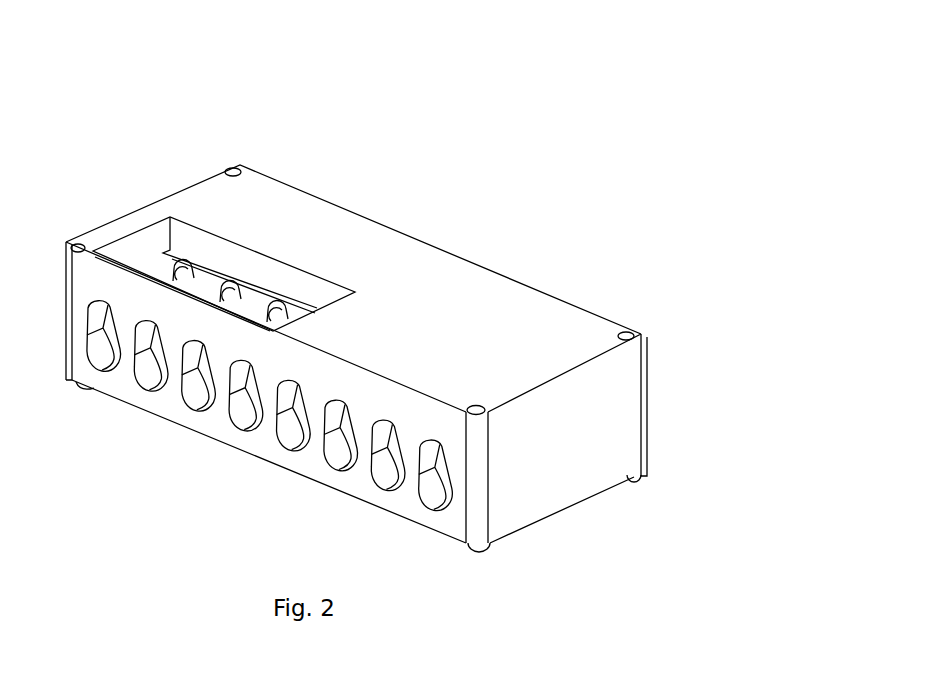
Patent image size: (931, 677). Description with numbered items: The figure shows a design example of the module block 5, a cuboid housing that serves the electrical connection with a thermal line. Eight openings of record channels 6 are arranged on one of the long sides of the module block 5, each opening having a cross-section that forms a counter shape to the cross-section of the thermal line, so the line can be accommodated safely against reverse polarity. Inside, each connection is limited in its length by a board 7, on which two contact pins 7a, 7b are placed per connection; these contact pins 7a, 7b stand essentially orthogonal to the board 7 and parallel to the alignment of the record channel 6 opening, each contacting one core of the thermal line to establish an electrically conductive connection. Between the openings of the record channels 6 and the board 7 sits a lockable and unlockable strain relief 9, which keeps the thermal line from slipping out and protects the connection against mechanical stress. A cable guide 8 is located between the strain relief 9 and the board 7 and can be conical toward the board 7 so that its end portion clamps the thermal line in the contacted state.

The module block 5 is at (415, 210).
The record channel 6 is at (137, 367).
The board 7 is at (229, 208).
The contact pin 7a is at (220, 277).
The contact pin 7b is at (233, 280).
The cable guide 8 is at (170, 213).
The strain relief 9 is at (130, 270).